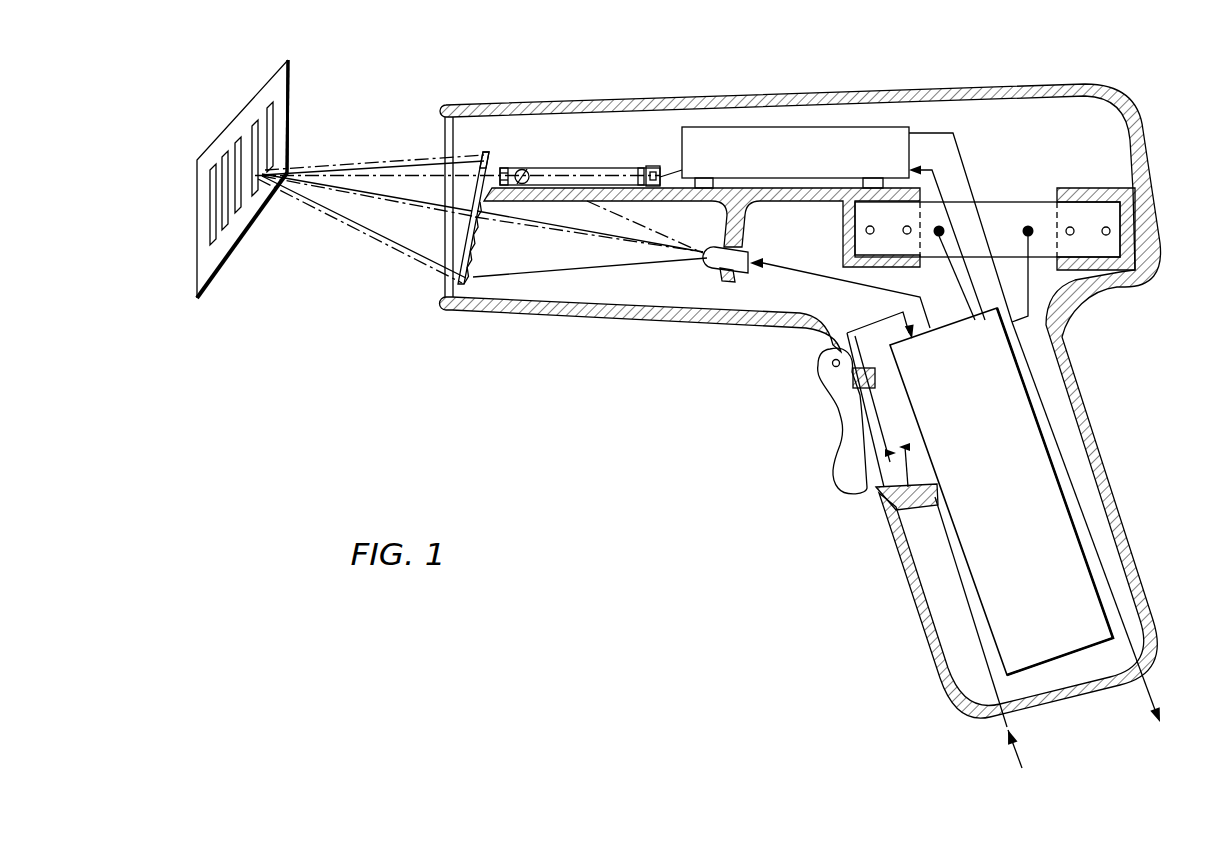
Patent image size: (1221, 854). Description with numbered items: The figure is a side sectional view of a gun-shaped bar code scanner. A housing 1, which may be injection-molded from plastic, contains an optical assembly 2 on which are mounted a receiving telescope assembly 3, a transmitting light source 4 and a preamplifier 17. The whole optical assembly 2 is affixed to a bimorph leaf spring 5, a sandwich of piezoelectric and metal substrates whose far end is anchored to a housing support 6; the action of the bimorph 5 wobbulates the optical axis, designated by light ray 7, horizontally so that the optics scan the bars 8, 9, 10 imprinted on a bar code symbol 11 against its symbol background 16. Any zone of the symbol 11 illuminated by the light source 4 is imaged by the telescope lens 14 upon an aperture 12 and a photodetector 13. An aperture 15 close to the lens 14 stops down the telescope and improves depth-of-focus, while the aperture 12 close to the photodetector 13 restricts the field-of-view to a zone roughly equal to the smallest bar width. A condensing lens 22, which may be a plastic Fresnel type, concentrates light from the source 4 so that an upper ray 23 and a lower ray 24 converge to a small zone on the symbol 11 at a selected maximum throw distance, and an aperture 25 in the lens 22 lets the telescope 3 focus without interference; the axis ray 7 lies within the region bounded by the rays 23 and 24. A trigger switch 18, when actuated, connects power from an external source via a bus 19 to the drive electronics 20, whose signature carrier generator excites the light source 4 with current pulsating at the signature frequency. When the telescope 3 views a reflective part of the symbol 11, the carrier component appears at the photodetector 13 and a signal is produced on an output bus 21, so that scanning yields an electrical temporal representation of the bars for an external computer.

The housing 1 is at (515, 100).
The optical assembly 2 is at (797, 201).
The receiving telescope assembly 3 is at (578, 168).
The transmitting light source 4 is at (718, 262).
The bimorph leaf spring 5 is at (995, 213).
The housing support 6 is at (1087, 188).
The light ray (optical axis) 7 is at (325, 173).
The bar 8 is at (210, 237).
The bar 9 is at (227, 227).
The bar 10 is at (275, 187).
The bar code symbol 11 is at (215, 133).
The aperture 12 is at (640, 168).
The photodetector 13 is at (657, 166).
The telescope lens 14 is at (527, 170).
The aperture 15 is at (505, 168).
The symbol background 16 is at (273, 90).
The preamplifier 17 is at (878, 136).
The trigger switch 18 is at (850, 470).
The bus 19 is at (1005, 723).
The drive electronics 20 is at (1047, 506).
The output bus 21 is at (1147, 680).
The condensing lens 22 is at (472, 267).
The upper ray 23 is at (363, 163).
The lower ray 24 is at (377, 233).
The aperture 25 is at (480, 160).